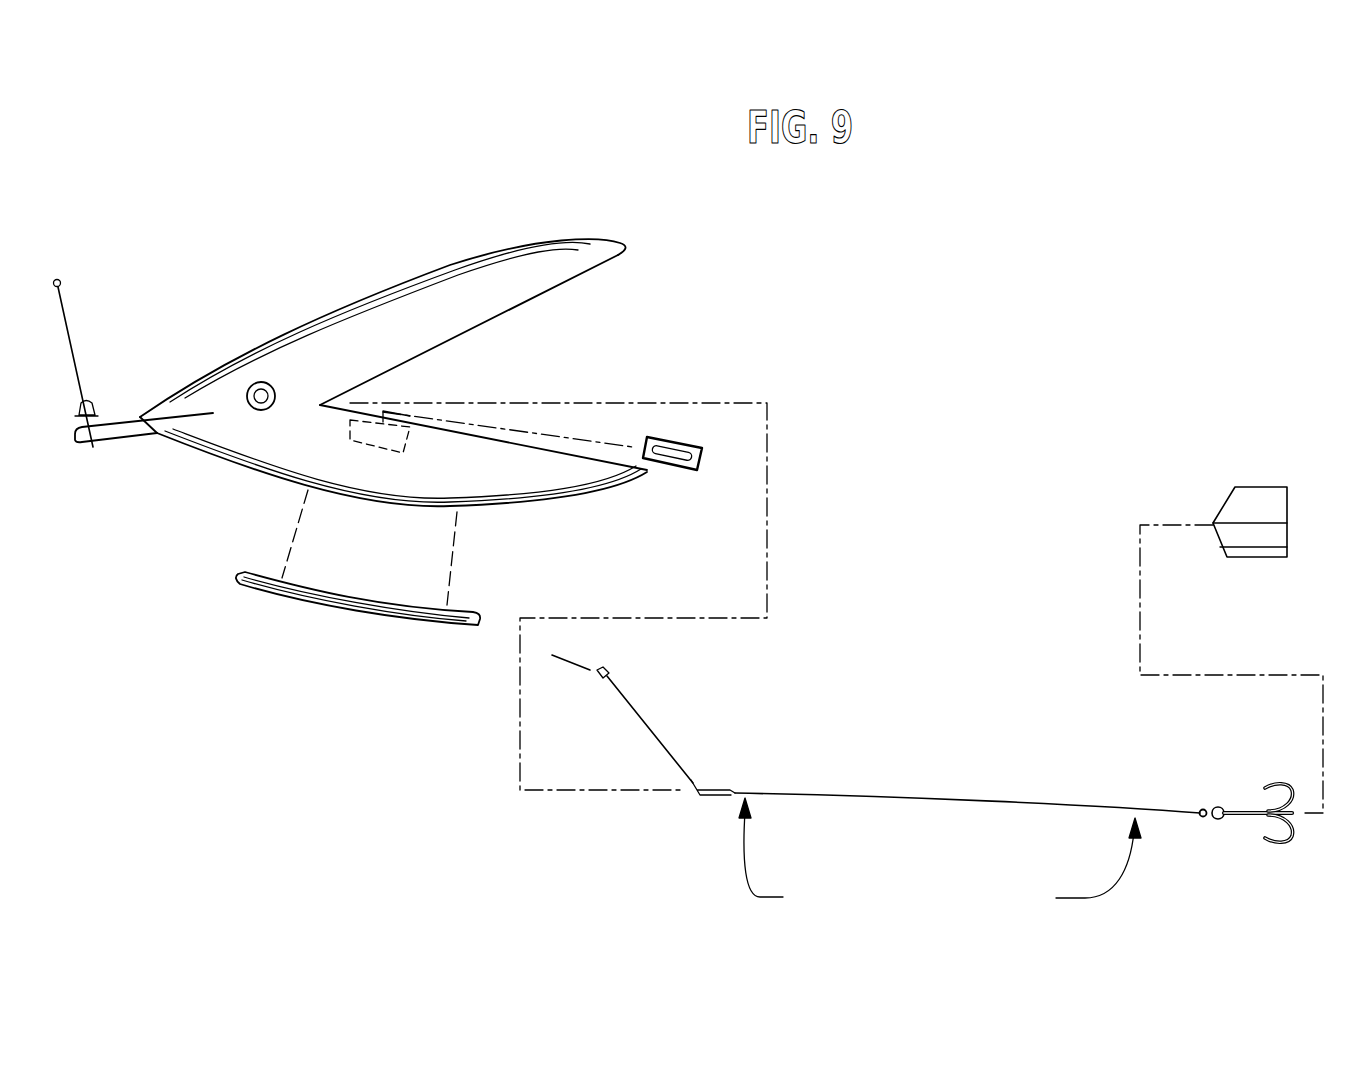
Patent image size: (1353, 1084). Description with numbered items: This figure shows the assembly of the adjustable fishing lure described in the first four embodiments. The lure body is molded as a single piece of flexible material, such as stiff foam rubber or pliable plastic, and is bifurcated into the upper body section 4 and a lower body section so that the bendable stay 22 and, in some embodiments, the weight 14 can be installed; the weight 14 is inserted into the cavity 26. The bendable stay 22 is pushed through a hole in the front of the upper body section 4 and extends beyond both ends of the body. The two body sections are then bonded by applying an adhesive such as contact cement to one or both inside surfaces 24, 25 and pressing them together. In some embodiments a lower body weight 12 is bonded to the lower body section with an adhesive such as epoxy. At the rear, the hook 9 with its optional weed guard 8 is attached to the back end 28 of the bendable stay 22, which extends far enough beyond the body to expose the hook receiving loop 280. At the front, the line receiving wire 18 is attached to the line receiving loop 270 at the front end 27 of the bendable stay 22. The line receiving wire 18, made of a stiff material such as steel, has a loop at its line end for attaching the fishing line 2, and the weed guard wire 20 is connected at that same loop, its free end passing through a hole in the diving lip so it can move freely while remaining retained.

The fishing line 2 is at (577, 660).
The upper body section 4 is at (440, 265).
The weed guard 8 is at (1257, 487).
The hook 9 is at (1267, 552).
The lower body weight 12 is at (328, 614).
The weight 14 is at (680, 440).
The line receiving wire 18 is at (643, 710).
The weed guard wire 20 is at (67, 350).
The bendable stay 22 is at (907, 795).
The inside surface 24 is at (547, 450).
The inside surface 25 is at (535, 297).
The cavity 26 is at (352, 442).
The front end 27 is at (782, 856).
The back end 28 is at (1080, 866).
The line receiving loop 270 is at (710, 793).
The hook receiving loop 280 is at (1199, 800).